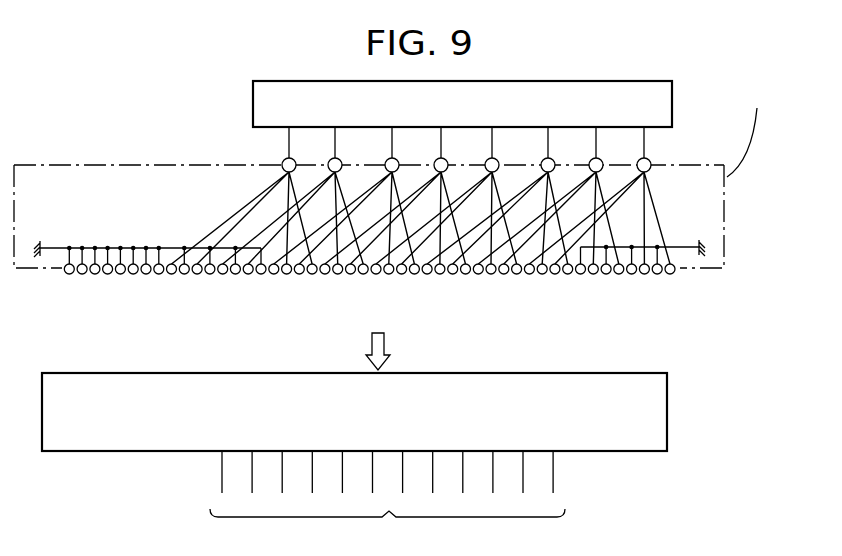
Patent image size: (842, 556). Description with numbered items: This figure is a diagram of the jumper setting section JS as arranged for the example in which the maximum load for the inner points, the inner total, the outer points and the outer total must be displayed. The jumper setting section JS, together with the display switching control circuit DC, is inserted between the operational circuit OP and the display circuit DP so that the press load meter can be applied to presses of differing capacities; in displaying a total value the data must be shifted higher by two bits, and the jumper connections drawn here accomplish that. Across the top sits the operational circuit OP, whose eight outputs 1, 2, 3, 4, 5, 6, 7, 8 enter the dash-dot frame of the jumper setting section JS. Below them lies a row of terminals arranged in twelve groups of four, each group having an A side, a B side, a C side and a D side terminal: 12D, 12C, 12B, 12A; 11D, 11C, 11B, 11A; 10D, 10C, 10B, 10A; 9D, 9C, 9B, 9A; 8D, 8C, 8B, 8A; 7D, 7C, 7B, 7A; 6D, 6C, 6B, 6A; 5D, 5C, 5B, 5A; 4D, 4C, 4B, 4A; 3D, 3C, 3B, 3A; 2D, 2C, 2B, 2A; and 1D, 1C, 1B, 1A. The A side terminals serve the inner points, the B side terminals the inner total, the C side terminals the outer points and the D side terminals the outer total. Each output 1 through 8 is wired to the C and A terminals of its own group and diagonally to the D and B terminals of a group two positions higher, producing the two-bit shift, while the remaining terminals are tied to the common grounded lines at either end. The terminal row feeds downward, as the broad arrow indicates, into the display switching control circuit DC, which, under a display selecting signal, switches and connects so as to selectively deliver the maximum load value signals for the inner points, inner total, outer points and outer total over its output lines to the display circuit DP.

The operational circuit OP is at (628, 81).
The jumper setting section JS is at (698, 161).
The display switching control circuit DC is at (667, 398).
The display circuit DP is at (387, 499).
The operational circuit output 1 is at (599, 195).
The operational circuit output 2 is at (548, 195).
The operational circuit output 3 is at (497, 195).
The operational circuit output 4 is at (446, 195).
The operational circuit output 5 is at (395, 195).
The operational circuit output 6 is at (344, 195).
The operational circuit output 7 is at (293, 195).
The operational circuit output 8 is at (242, 195).
The D side terminal 12D is at (69, 284).
The C side terminal 12C is at (82, 275).
The B side terminal 12B is at (94, 283).
The A side terminal 12A is at (108, 275).
The D side terminal 11D is at (120, 284).
The C side terminal 11C is at (133, 275).
The B side terminal 11B is at (146, 283).
The A side terminal 11A is at (159, 275).
The D side terminal 10D is at (171, 284).
The C side terminal 10C is at (184, 275).
The B side terminal 10B is at (197, 283).
The A side terminal 10A is at (210, 275).
The D side terminal 9D is at (222, 280).
The C side terminal 9C is at (235, 275).
The B side terminal 9B is at (248, 279).
The A side terminal 9A is at (261, 275).
The D side terminal 8D is at (273, 280).
The C side terminal 8C is at (287, 275).
The B side terminal 8B is at (299, 279).
The A side terminal 8A is at (312, 275).
The D side terminal 7D is at (324, 280).
The C side terminal 7C is at (338, 275).
The B side terminal 7B is at (350, 279).
The A side terminal 7A is at (363, 275).
The D side terminal 6D is at (376, 280).
The C side terminal 6C is at (389, 275).
The B side terminal 6B is at (401, 279).
The A side terminal 6A is at (414, 275).
The D side terminal 5D is at (427, 280).
The C side terminal 5C is at (440, 275).
The B side terminal 5B is at (452, 279).
The A side terminal 5A is at (466, 275).
The D side terminal 4D is at (478, 280).
The C side terminal 4C is at (491, 275).
The B side terminal 4B is at (503, 279).
The A side terminal 4A is at (517, 275).
The D side terminal 3D is at (529, 280).
The C side terminal 3C is at (542, 275).
The B side terminal 3B is at (554, 279).
The A side terminal 3A is at (568, 275).
The D side terminal 2D is at (580, 280).
The C side terminal 2C is at (593, 275).
The B side terminal 2B is at (606, 279).
The A side terminal 2A is at (619, 275).
The D side terminal 1D is at (631, 280).
The C side terminal 1C is at (644, 275).
The B side terminal 1B is at (657, 279).
The A side terminal 1A is at (670, 275).